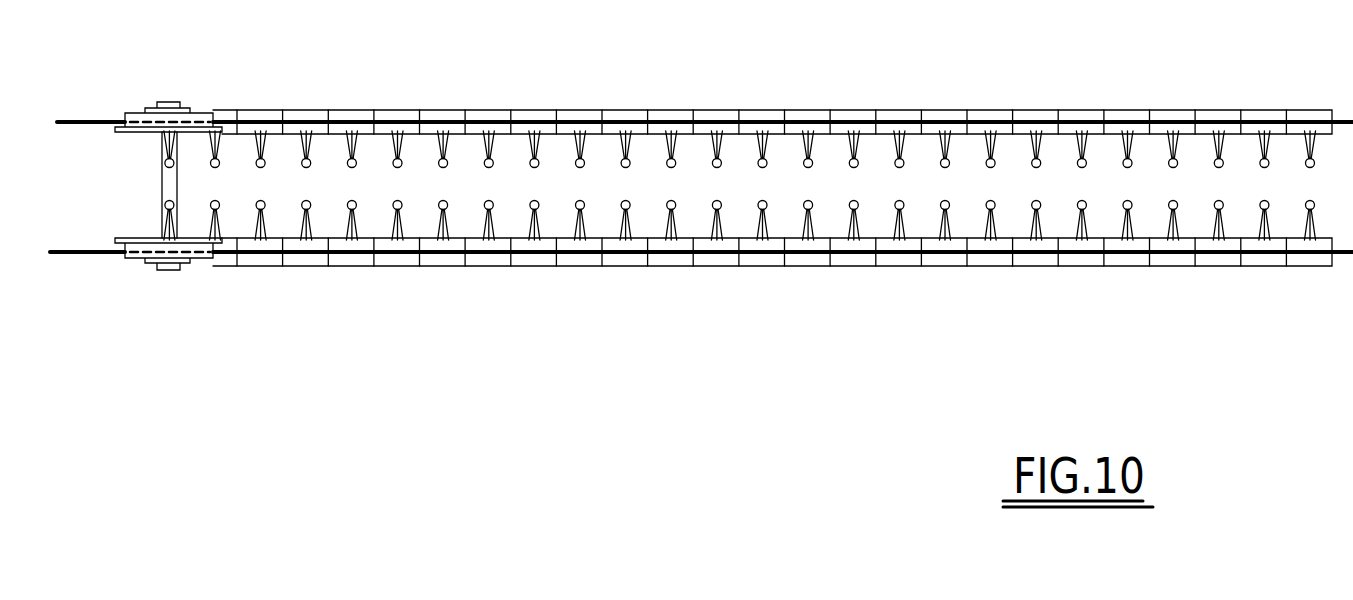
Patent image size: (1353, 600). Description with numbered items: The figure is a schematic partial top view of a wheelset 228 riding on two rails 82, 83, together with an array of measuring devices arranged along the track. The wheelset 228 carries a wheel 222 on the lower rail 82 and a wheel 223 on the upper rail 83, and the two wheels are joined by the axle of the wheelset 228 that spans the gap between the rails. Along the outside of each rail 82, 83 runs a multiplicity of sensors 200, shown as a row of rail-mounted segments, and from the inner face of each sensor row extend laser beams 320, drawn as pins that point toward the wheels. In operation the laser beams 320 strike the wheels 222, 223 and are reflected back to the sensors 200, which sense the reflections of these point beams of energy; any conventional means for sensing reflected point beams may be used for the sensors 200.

The sensor 200 is at (290, 108).
The laser beam 320 is at (304, 168).
The rail 83 is at (102, 118).
The rail 82 is at (81, 254).
The wheel 223 is at (138, 112).
The wheel 222 is at (138, 260).
The wheelset 228 is at (168, 180).